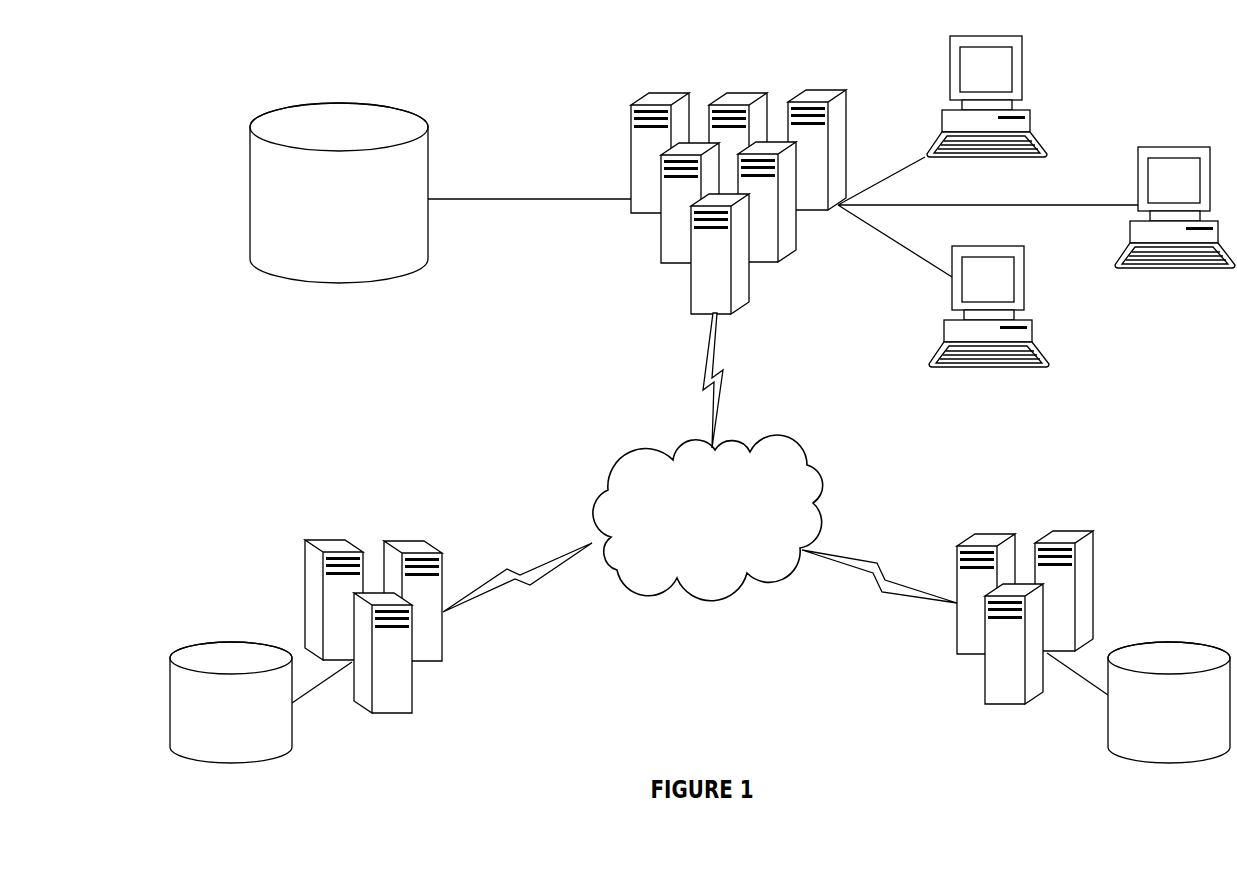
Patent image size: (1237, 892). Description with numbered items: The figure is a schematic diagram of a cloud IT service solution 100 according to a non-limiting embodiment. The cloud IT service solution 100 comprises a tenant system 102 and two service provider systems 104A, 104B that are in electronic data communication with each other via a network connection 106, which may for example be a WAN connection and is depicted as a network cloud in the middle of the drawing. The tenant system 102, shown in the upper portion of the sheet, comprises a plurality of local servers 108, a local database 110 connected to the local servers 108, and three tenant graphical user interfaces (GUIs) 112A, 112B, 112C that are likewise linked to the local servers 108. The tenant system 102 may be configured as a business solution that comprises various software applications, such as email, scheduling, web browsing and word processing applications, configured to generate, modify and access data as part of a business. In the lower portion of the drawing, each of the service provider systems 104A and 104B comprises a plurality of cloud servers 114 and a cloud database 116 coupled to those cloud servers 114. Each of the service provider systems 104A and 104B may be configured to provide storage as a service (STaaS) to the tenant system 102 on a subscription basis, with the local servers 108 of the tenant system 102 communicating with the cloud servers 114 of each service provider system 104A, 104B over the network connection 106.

The cloud IT service solution 100 is at (702, 399).
The tenant system 102 is at (742, 201).
The service provider system 104A is at (1084, 484).
The service provider system 104B is at (322, 499).
The network connection 106 is at (618, 463).
The local servers 108 is at (792, 257).
The local database 110 is at (335, 283).
The tenant graphical user interface 112A is at (1025, 72).
The tenant graphical user interface 112B is at (1173, 147).
The tenant graphical user interface 112C is at (1030, 330).
The cloud servers 114 is at (305, 563).
The cloud database 116 is at (232, 642).